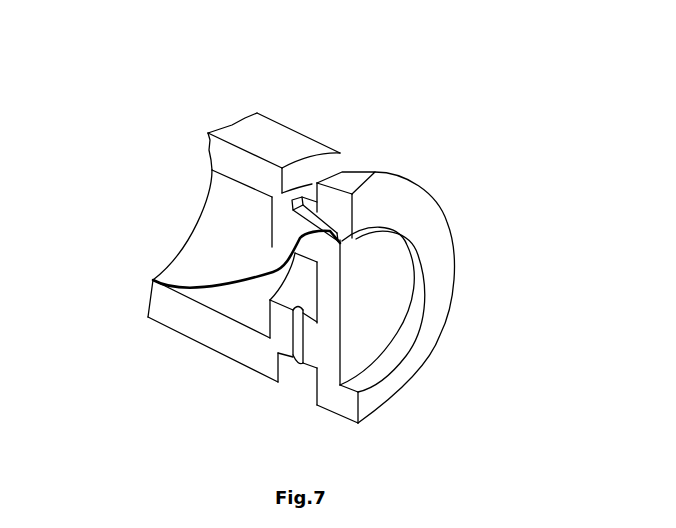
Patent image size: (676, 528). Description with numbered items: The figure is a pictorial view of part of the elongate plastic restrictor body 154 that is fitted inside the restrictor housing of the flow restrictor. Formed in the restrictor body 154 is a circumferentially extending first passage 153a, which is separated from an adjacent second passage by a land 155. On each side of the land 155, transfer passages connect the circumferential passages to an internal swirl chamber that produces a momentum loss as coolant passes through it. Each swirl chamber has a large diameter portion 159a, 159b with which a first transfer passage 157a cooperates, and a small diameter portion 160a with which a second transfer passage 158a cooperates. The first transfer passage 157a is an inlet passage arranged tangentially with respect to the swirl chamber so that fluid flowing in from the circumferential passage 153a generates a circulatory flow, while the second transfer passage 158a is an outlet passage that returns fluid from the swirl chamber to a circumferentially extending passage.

The restrictor body 154 is at (197, 129).
The land 155 is at (325, 137).
The first passage 153a is at (354, 157).
The large diameter portion 159a is at (221, 182).
The large diameter portion 159b is at (406, 348).
The small diameter portion 160a is at (271, 246).
The first transfer passage 157a is at (152, 281).
The second transfer passage 158a is at (274, 348).